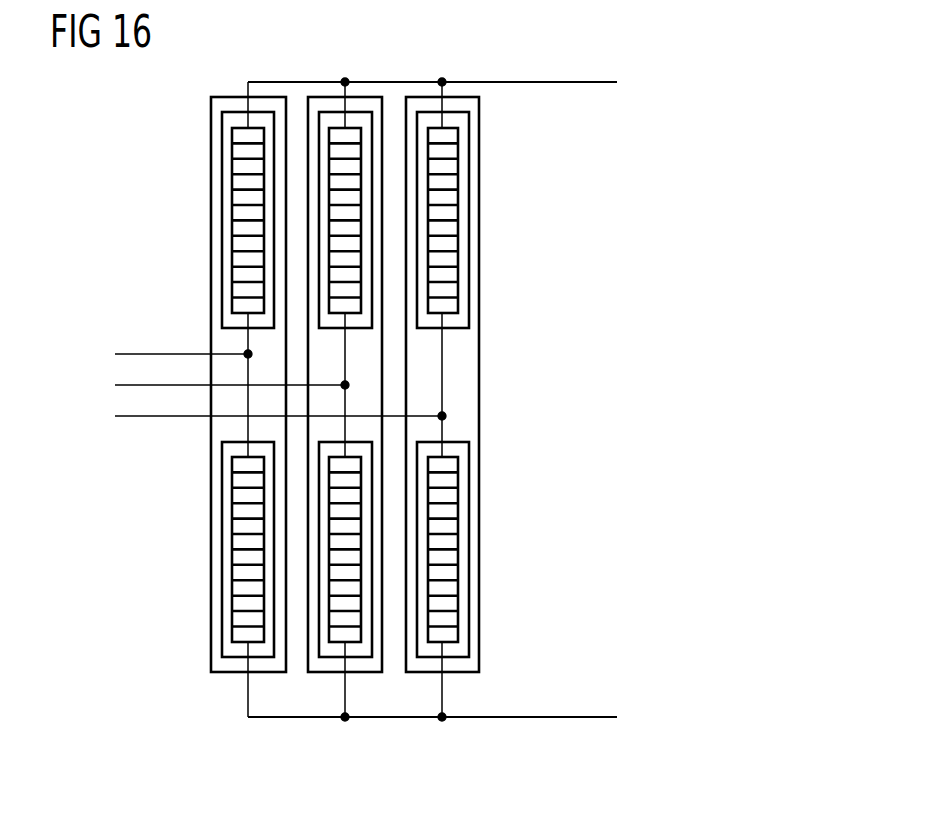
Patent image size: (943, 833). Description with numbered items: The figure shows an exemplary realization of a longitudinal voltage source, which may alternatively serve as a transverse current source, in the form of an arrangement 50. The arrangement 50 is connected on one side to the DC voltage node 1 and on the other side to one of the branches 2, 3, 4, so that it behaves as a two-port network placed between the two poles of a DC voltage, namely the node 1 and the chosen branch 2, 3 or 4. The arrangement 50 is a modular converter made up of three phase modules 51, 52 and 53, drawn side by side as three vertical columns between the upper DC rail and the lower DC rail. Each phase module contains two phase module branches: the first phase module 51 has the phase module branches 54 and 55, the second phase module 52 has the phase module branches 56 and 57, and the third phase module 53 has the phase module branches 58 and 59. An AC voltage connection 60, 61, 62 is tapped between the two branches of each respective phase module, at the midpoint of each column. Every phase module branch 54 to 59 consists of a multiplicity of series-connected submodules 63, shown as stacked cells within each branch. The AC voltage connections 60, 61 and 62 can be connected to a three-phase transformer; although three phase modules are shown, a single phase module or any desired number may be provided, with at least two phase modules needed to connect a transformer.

The DC voltage node 1 is at (530, 82).
The branch 2 is at (432, 685).
The branch 3 is at (432, 717).
The branch 4 is at (557, 717).
The arrangement 50 is at (423, 68).
The phase module 51 is at (211, 182).
The phase module 52 is at (325, 97).
The phase module 53 is at (479, 126).
The phase module branch 54 is at (222, 128).
The phase module branch 55 is at (222, 527).
The phase module branch 56 is at (356, 112).
The phase module branch 57 is at (328, 657).
The phase module branch 58 is at (479, 220).
The phase module branch 59 is at (469, 542).
The AC voltage connection 60 is at (115, 354).
The AC voltage connection 61 is at (115, 385).
The AC voltage connection 62 is at (115, 416).
The submodule 63 is at (446, 199).